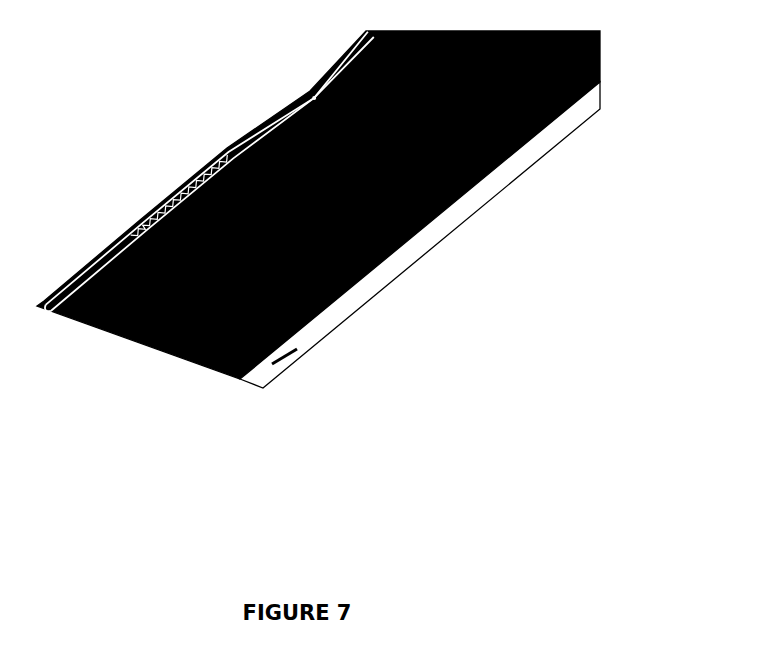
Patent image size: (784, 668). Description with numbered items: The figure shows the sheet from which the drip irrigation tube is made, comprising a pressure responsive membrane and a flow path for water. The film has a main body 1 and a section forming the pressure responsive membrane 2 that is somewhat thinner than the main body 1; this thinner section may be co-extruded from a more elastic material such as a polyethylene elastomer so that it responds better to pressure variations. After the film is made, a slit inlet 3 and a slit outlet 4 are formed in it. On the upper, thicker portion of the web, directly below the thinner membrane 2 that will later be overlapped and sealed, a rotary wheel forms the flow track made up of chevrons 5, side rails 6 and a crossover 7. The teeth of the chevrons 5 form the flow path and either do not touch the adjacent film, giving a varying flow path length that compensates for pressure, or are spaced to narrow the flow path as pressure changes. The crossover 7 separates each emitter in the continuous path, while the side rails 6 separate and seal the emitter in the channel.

The main body 1 is at (150, 350).
The pressure responsive membrane 2 is at (258, 378).
The slit inlet 3 is at (298, 349).
The slit outlet 4 is at (269, 122).
The chevrons (teeth) 5 is at (172, 205).
The side rails 6 is at (72, 285).
The crossover 7 is at (312, 86).